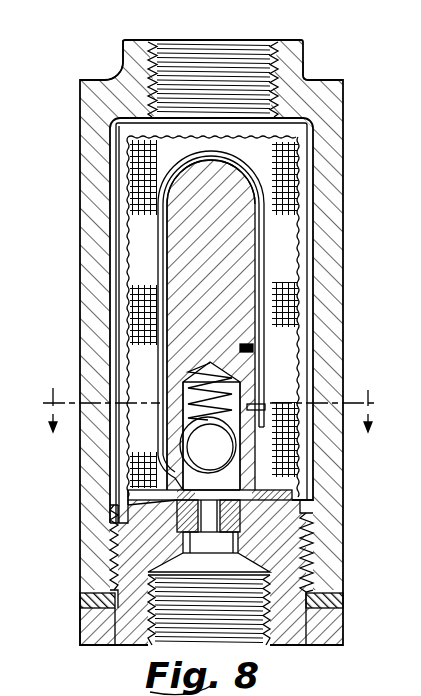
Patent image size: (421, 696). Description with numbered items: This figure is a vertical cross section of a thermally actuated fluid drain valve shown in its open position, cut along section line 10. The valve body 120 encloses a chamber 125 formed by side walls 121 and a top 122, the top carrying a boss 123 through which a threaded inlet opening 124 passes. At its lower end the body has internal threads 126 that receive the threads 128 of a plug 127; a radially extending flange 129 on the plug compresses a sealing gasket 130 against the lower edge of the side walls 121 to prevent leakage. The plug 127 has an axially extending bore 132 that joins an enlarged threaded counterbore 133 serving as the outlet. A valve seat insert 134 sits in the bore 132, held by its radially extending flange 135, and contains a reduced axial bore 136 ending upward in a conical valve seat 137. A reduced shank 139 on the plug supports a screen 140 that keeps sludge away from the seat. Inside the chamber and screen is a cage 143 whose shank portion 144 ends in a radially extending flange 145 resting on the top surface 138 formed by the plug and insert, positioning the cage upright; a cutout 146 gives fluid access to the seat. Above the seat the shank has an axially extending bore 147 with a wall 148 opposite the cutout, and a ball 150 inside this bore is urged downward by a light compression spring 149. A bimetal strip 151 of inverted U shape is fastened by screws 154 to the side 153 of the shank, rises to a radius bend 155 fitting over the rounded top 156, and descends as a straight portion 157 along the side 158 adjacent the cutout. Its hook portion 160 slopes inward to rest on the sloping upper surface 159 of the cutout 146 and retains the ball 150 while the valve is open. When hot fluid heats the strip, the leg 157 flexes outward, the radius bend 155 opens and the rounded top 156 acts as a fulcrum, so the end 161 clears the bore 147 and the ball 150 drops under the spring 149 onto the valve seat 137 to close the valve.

The section line 10 is at (209, 400).
The valve body 120 is at (76, 145).
The side walls 121 is at (84, 253).
The top 122 is at (305, 92).
The boss 123 is at (128, 55).
The threaded inlet opening 124 is at (232, 48).
The chamber 125 is at (312, 204).
The internal threads 126 is at (110, 550).
The plug 127 is at (118, 645).
The threads 128 is at (110, 578).
The radially extending flange 129 is at (87, 632).
The sealing gasket 130 is at (82, 602).
The axially extending bore 132 is at (180, 556).
The threaded counterbore 133 is at (267, 645).
The valve seat insert 134 is at (236, 530).
The radially extending flange 135 is at (131, 572).
The reduced axial bore 136 is at (210, 543).
The conical valve seat 137 is at (240, 520).
The top surface 138 is at (128, 492).
The reduced shank 139 is at (118, 522).
The screen 140 is at (128, 308).
The cage 143 is at (226, 280).
The shank portion 144 is at (250, 241).
The radially extending flange 145 is at (283, 488).
The cutout 146 is at (190, 492).
The axially extending bore 147 is at (167, 387).
The wall 148 is at (257, 450).
The light compression spring 149 is at (209, 362).
The ball 150 is at (220, 455).
The bimetal strip 151 is at (266, 277).
The side 153 is at (255, 303).
The screws 154 is at (264, 405).
The radius bend 155 is at (228, 160).
The rounded top 156 is at (188, 160).
The straight portion 157 is at (162, 290).
The side 158 is at (168, 240).
The sloping upper surface 159 is at (160, 455).
The hook portion 160 is at (158, 468).
The end 161 is at (170, 502).